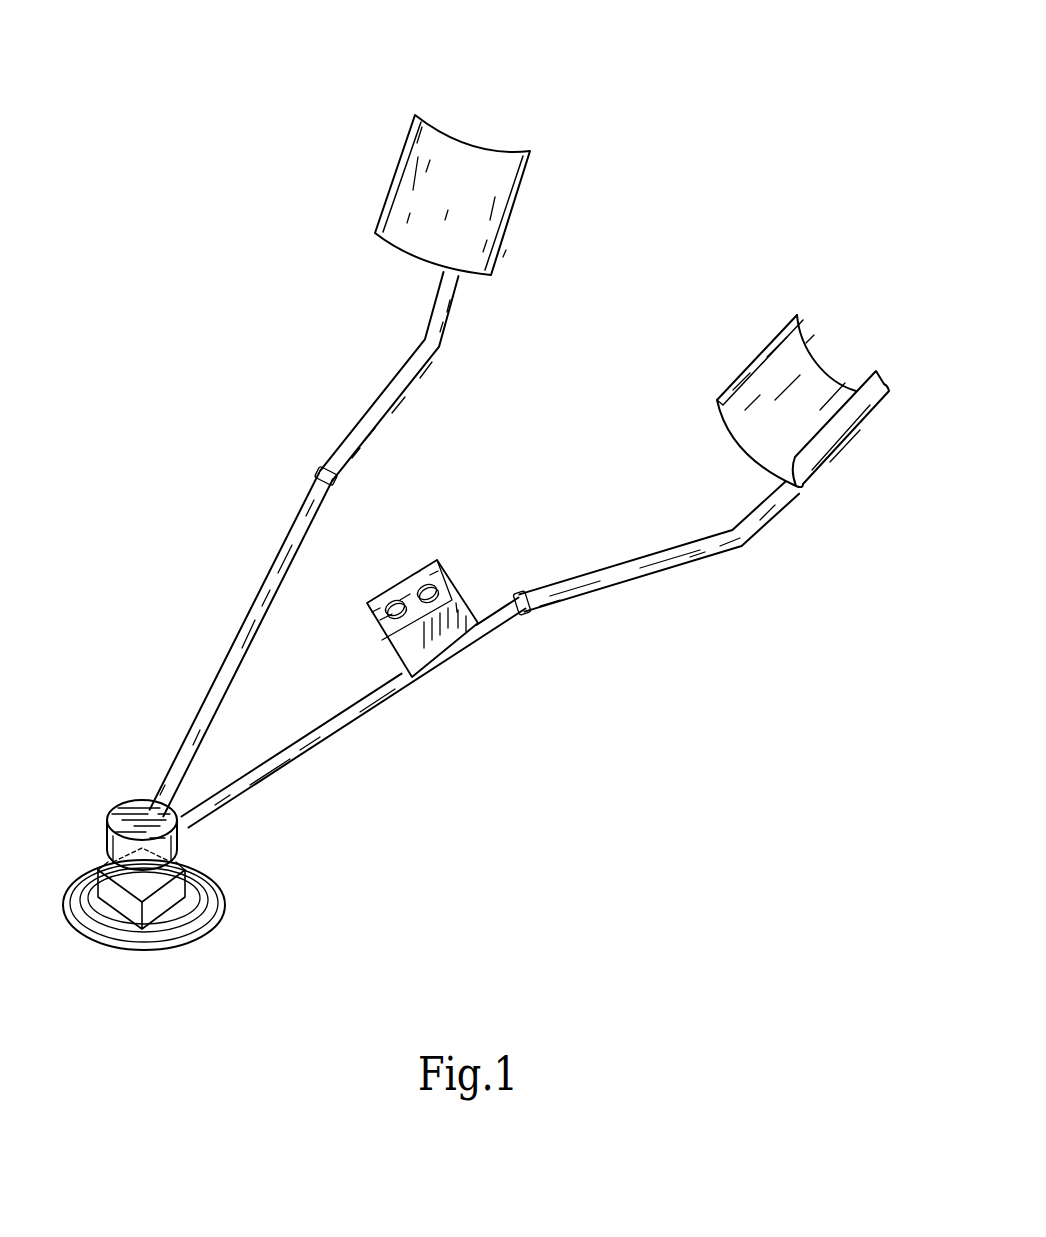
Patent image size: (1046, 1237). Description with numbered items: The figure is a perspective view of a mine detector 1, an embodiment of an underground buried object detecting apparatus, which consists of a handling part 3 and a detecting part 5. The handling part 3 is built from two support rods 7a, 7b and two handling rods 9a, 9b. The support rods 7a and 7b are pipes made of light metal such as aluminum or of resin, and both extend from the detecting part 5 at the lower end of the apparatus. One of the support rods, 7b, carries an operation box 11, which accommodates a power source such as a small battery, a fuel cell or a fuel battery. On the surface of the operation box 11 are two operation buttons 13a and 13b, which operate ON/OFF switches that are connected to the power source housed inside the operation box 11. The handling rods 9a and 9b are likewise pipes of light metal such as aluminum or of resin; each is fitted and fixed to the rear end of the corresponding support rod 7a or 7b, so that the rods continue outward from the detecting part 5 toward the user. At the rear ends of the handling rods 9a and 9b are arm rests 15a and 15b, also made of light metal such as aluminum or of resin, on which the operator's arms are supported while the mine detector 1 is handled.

The mine detector 1 is at (733, 130).
The handling part 3 is at (343, 421).
The detecting part 5 is at (97, 824).
The support rod 7a is at (266, 566).
The support rod 7b is at (350, 730).
The handling rod 9a is at (420, 374).
The handling rod 9b is at (635, 580).
The operation box 11 is at (445, 652).
The operation button 13a is at (432, 582).
The operation button 13b is at (393, 598).
The arm rest 15a is at (462, 160).
The arm rest 15b is at (815, 375).